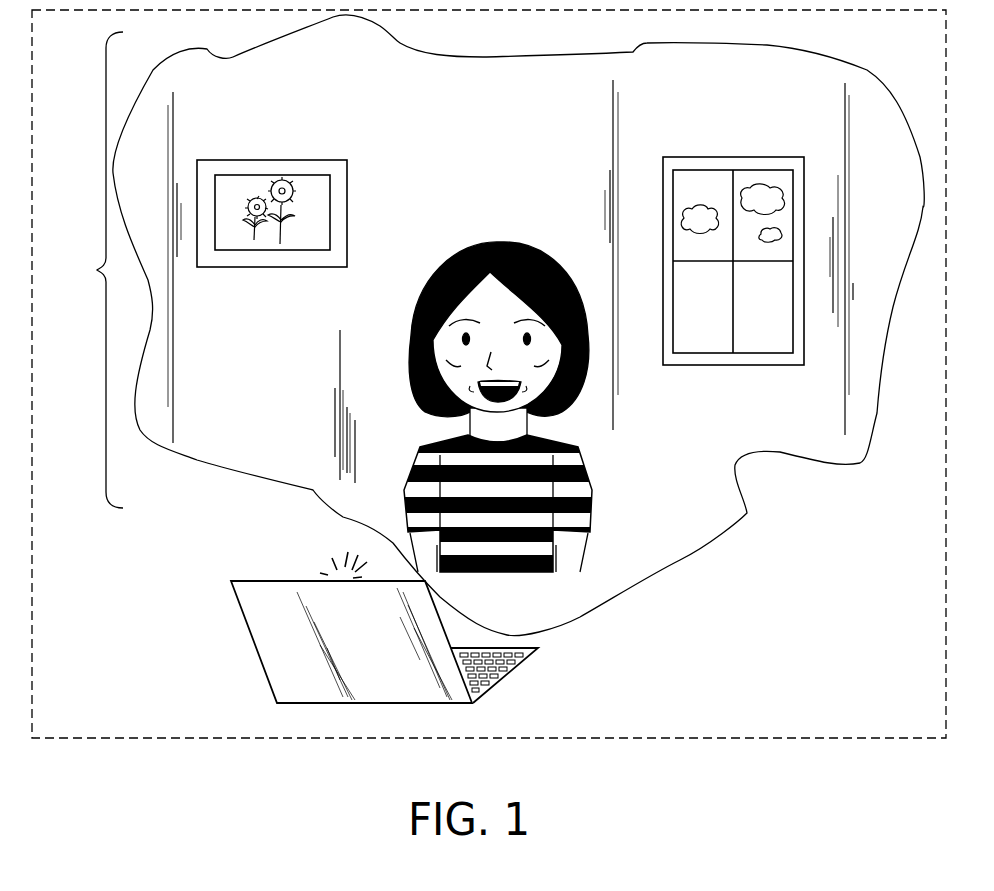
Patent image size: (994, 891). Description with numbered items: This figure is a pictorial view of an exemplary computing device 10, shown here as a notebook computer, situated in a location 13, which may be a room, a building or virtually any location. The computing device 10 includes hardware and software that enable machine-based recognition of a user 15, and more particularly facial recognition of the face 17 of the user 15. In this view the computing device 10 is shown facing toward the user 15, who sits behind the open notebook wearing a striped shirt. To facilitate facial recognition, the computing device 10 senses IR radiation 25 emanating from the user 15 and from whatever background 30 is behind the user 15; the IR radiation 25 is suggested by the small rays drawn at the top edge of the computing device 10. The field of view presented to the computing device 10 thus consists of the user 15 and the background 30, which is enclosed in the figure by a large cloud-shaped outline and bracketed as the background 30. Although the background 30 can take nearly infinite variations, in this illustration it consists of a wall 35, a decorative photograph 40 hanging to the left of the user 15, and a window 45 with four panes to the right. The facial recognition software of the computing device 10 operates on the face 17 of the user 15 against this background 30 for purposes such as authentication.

The computing device 10 is at (258, 632).
The location 13 is at (796, 740).
The user 15 is at (522, 407).
The face 17 is at (508, 310).
The IR radiation 25 is at (318, 561).
The background 30 is at (92, 270).
The wall 35 is at (460, 165).
The decorative photograph 40 is at (230, 182).
The window 45 is at (697, 183).